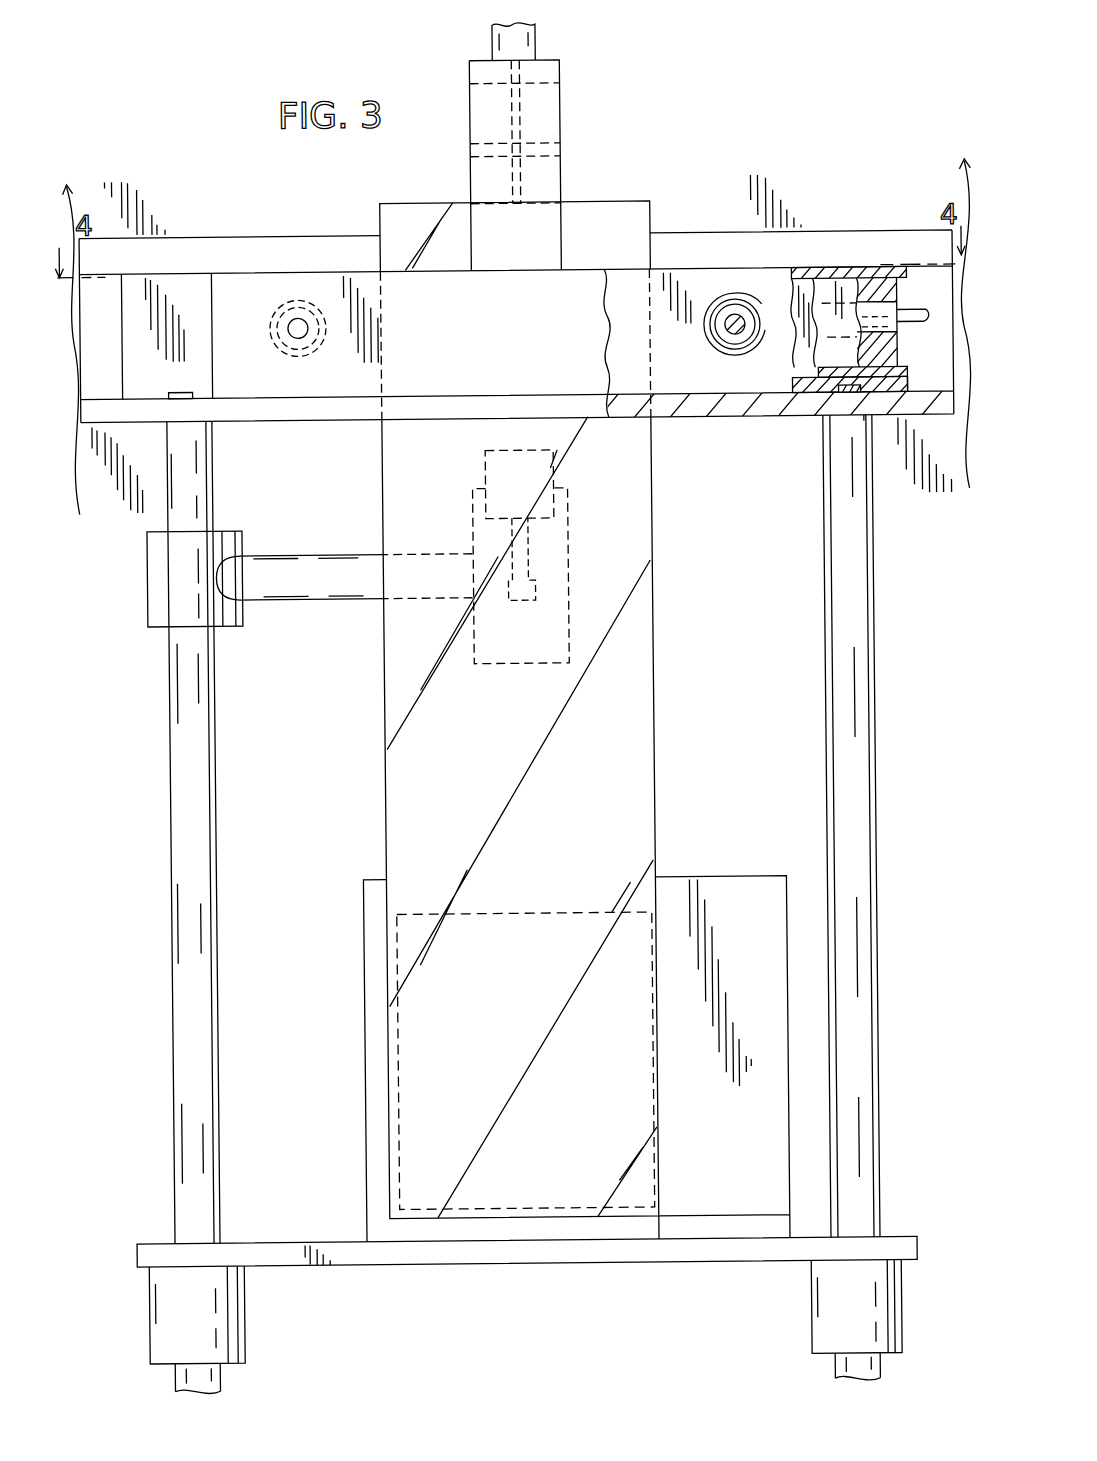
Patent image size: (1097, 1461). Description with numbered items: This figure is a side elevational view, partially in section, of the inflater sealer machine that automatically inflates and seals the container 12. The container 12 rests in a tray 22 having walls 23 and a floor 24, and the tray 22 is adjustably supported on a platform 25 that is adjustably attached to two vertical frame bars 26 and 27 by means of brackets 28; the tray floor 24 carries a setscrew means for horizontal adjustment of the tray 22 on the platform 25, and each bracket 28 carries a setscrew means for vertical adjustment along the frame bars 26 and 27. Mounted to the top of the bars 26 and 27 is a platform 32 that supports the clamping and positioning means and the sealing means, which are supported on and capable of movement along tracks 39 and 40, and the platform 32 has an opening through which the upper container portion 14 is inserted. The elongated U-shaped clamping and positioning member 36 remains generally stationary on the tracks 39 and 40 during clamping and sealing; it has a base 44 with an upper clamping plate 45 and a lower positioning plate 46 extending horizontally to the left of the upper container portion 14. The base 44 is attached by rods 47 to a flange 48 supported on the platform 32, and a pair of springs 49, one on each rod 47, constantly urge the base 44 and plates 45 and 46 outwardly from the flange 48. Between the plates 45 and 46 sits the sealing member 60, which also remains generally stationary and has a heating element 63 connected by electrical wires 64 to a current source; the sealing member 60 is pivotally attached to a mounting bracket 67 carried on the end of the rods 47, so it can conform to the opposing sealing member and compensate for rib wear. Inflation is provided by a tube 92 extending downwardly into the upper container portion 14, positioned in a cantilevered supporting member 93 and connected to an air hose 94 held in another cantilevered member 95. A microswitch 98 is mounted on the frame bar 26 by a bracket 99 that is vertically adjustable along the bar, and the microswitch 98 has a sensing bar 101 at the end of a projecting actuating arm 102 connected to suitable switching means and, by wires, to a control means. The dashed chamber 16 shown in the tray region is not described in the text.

The container 12 is at (657, 746).
The upper container portion 14 is at (411, 206).
The chamber 16 is at (651, 1107).
The tray 22 is at (737, 878).
The walls 23 is at (368, 1083).
The floor 24 is at (657, 1241).
The platform 25 is at (442, 1257).
The vertical frame bar 26 is at (214, 913).
The vertical frame bar 27 is at (872, 943).
The brackets 28 is at (229, 1317).
The platform 32 is at (720, 427).
The U-shaped clamping and positioning member 36 is at (124, 321).
The track 39 is at (869, 421).
The track 40 is at (179, 389).
The base 44 is at (174, 286).
The upper clamping plate 45 is at (835, 268).
The lower positioning plate 46 is at (803, 395).
The rods 47 is at (302, 328).
The flange 48 is at (585, 283).
The springs 49 is at (312, 348).
The sealing member 60 is at (874, 288).
The heating element 63 is at (884, 349).
The electrical wires 64 is at (916, 320).
The mounting bracket 67 is at (903, 420).
The tube 92 is at (527, 112).
The cantilevered supporting member 93 is at (559, 148).
The air hose 94 is at (539, 43).
The cantilevered member 95 is at (560, 73).
The microswitch 98 is at (569, 622).
The bracket 99 is at (302, 555).
The sensing bar 101 is at (558, 472).
The actuating arm 102 is at (532, 557).